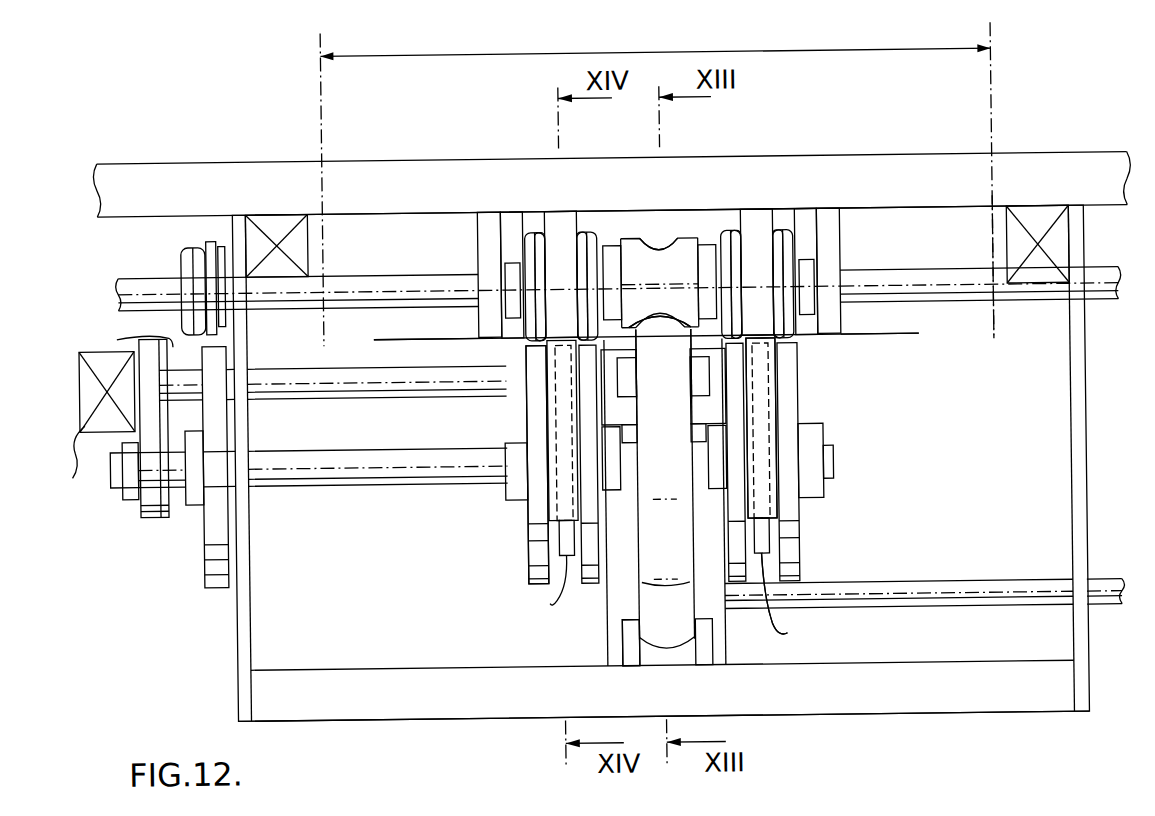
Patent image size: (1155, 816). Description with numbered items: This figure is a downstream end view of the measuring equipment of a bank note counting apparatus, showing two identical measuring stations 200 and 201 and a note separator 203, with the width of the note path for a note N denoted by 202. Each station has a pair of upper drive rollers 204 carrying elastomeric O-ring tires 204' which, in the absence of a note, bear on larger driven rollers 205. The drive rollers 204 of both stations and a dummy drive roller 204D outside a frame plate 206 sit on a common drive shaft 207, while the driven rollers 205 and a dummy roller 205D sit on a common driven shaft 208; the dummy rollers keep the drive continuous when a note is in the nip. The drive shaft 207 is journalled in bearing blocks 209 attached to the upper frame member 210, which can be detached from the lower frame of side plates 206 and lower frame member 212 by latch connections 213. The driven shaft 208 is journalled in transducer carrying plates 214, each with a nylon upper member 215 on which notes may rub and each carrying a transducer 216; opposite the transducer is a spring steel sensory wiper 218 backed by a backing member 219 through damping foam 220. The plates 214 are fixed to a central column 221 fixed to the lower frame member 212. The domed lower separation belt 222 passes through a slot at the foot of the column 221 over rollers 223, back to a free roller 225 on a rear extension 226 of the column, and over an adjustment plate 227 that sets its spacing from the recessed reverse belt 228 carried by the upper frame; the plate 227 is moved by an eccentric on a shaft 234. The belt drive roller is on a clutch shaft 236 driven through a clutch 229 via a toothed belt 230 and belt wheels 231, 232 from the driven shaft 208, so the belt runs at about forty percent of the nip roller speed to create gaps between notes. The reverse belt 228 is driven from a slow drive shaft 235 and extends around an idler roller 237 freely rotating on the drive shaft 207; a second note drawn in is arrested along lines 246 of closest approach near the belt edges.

The measuring station 200 is at (490, 542).
The measuring station 201 is at (807, 373).
The note path width 202 is at (878, 54).
The note separator 203 is at (672, 232).
The drive roller 204 is at (651, 252).
The O-ring tire 204' is at (647, 252).
The dummy drive roller 204D is at (188, 236).
The driven roller 205 is at (590, 407).
The dummy driven roller 205D is at (217, 558).
The frame plate 206 is at (1080, 522).
The drive shaft 207 is at (348, 257).
The driven shaft 208 is at (373, 480).
The bearing block 209 is at (486, 241).
The upper frame member 210 is at (355, 158).
The lower frame member 212 is at (880, 699).
The latch connection 213 is at (280, 266).
The transducer carrying plate 214 is at (553, 499).
The upper member 215 is at (547, 361).
The transducer 216 is at (560, 543).
The sensory wiper 218 is at (525, 344).
The backing member 219 is at (560, 317).
The damping foam 220 is at (547, 329).
The central column 221 is at (615, 608).
The lower separation belt 222 is at (782, 640).
The rollers 223 is at (633, 633).
The free roller 225 is at (682, 401).
The rear extension 226 is at (713, 414).
The adjustment plate 227 is at (692, 348).
The reverse belt 228 is at (657, 231).
The clutch 229 is at (81, 415).
The toothed belt 230 is at (153, 517).
The belt wheel 231 is at (177, 507).
The belt wheel 232 is at (127, 338).
The eccentric shaft 234 is at (983, 592).
The slow drive shaft 235 is at (965, 307).
The clutch shaft 236 is at (332, 390).
The idler roller 237 is at (697, 293).
The lines of closest approach 246 is at (640, 330).
The note N is at (920, 339).